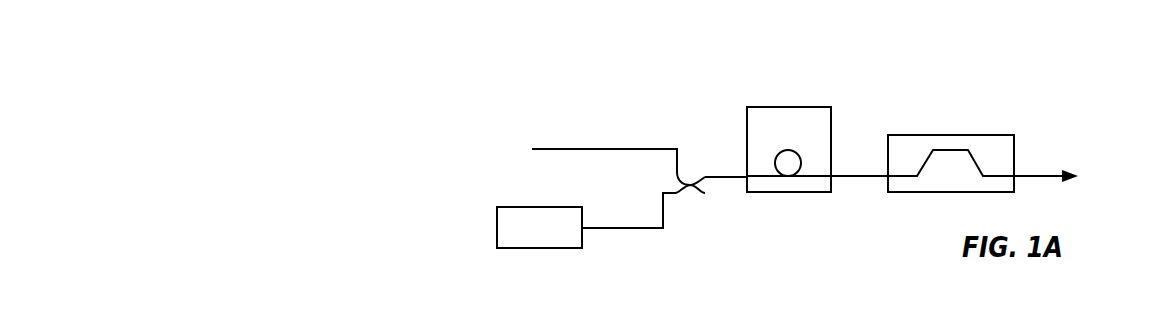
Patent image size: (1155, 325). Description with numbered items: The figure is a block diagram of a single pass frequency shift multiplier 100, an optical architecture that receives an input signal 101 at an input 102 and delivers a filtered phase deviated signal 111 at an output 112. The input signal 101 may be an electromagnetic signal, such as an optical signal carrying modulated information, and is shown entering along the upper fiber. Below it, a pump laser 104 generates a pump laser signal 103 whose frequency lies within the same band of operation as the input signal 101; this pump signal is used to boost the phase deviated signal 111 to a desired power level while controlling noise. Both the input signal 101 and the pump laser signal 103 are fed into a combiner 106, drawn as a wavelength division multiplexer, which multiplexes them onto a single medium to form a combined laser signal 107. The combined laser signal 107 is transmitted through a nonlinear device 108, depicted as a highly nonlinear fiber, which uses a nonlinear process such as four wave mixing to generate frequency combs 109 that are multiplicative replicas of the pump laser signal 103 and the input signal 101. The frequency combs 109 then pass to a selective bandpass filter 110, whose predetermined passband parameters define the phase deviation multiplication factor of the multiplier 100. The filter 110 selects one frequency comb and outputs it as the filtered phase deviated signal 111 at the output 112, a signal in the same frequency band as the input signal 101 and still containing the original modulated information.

The single pass frequency shift multiplier 100 is at (487, 82).
The input signal 101 is at (623, 147).
The input 102 is at (553, 148).
The pump laser signal 103 is at (597, 227).
The pump laser 104 is at (512, 207).
The combiner 106 is at (689, 184).
The combined laser signal 107 is at (723, 178).
The nonlinear device 108 is at (778, 106).
The frequency combs 109 is at (858, 178).
The selective bandpass filter 110 is at (910, 134).
The filtered phase deviated signal 111 is at (1030, 172).
The output 112 is at (1075, 171).